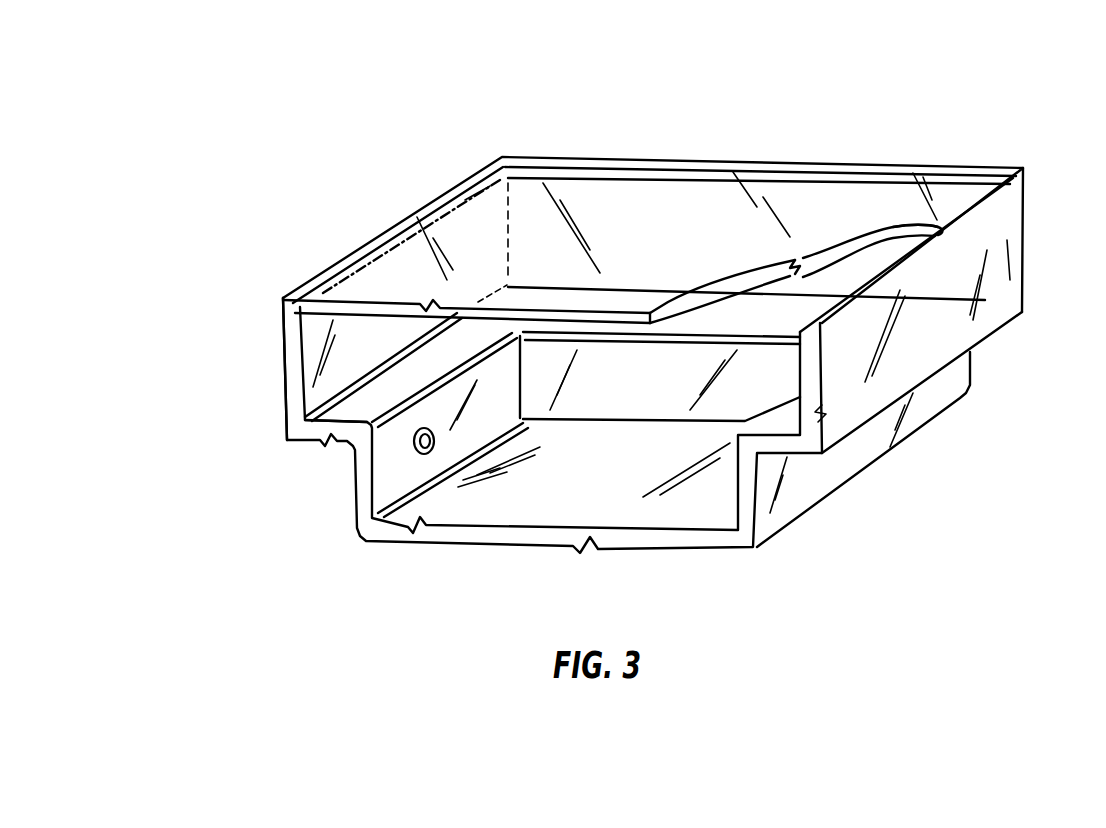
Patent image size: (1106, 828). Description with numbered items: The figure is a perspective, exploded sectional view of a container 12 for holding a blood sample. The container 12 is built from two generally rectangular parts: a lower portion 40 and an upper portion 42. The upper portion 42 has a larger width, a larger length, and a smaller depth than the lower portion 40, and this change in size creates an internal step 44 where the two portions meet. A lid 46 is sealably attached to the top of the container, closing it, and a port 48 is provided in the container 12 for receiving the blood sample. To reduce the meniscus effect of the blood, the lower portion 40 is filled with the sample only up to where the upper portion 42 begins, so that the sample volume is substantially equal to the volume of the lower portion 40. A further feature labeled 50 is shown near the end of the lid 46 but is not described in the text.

The container 12 is at (973, 360).
The lower portion 40 is at (388, 480).
The upper portion 42 is at (318, 333).
The internal step 44 is at (353, 407).
The lid 46 is at (692, 203).
The port 48 is at (413, 442).
The strap end portion 50 is at (870, 257).